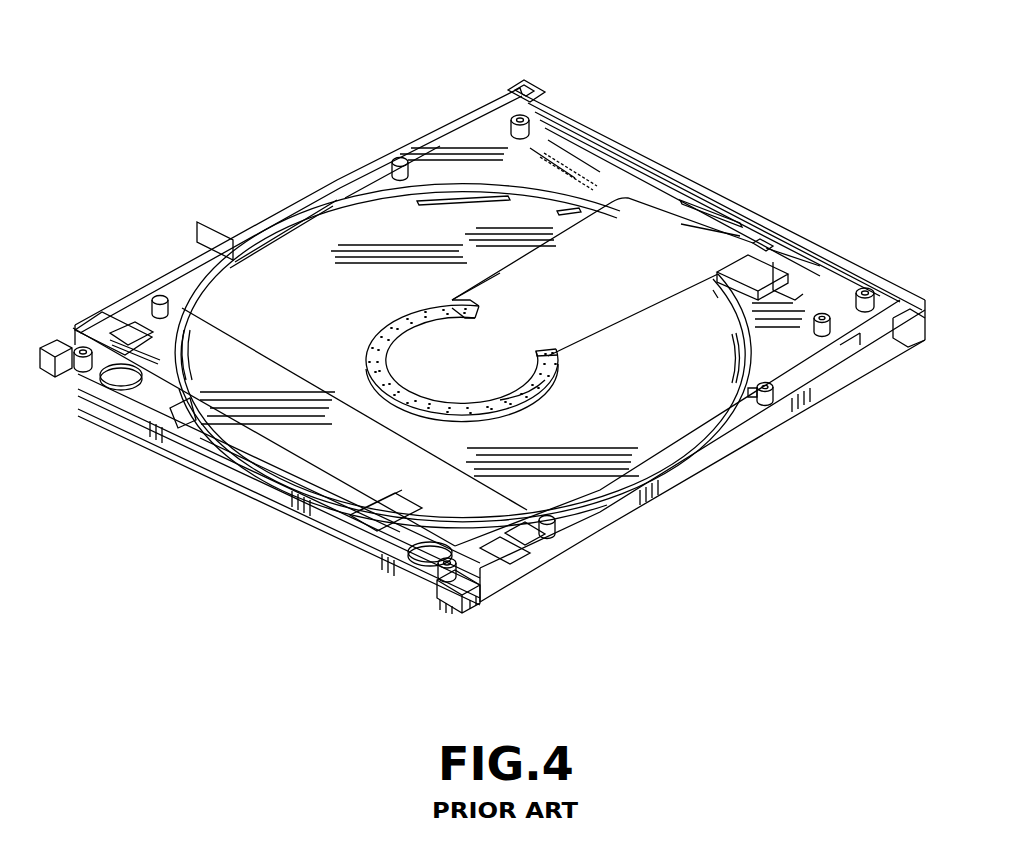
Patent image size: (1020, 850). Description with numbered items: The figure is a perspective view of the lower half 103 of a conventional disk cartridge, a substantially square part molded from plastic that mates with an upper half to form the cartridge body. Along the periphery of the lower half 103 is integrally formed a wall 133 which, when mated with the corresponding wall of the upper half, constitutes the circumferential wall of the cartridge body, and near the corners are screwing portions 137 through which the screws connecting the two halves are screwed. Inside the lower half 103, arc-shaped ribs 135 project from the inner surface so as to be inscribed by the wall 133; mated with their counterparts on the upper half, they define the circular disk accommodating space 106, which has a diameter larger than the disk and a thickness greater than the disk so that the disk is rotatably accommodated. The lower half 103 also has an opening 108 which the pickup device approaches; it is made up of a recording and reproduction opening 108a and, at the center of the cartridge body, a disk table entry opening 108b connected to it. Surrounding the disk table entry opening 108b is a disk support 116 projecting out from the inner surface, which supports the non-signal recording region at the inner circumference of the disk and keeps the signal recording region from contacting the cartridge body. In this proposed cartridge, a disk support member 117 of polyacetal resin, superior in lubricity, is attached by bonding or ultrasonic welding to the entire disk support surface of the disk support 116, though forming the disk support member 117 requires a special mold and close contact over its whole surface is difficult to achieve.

The lower half 103 is at (243, 198).
The disk accommodating space 106 is at (300, 455).
The opening 108 is at (697, 381).
The recording and reproduction opening 108a is at (680, 222).
The disk table entry opening 108b is at (400, 397).
The disk support 116 is at (545, 397).
The disk support member 117 is at (410, 315).
The wall 133 is at (675, 480).
The arc-shaped rib 135 is at (188, 287).
The screwing portion 137 is at (540, 127).